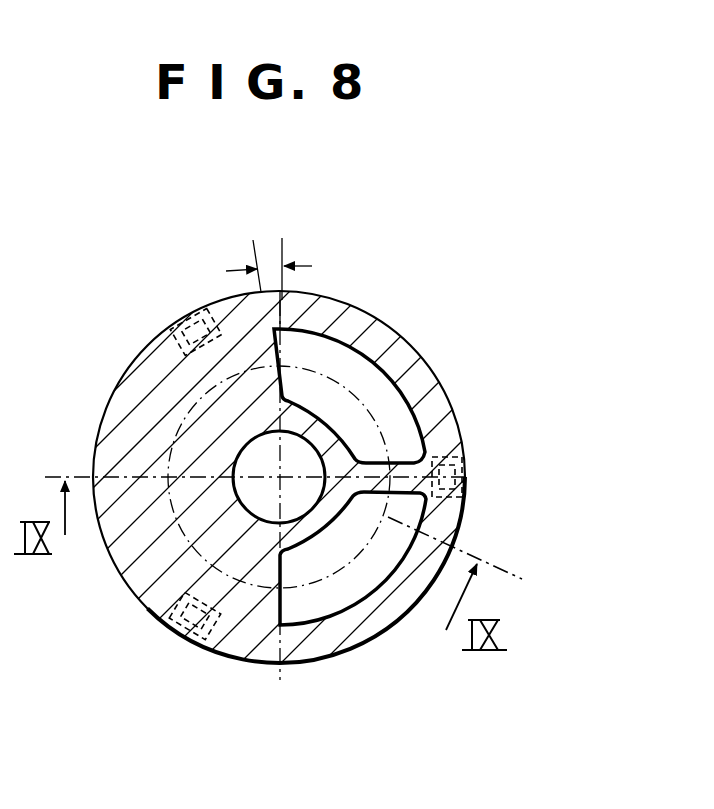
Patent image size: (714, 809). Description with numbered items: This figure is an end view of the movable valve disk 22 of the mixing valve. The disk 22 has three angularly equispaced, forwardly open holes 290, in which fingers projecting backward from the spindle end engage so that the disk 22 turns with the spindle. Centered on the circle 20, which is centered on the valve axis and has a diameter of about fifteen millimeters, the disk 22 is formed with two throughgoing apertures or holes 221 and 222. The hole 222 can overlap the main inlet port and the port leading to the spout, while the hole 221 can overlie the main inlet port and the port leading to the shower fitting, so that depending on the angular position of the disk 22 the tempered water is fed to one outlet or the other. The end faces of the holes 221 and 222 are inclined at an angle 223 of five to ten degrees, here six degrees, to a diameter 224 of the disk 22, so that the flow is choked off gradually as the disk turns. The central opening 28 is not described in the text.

The circle 20 is at (170, 512).
The movable valve disk 22 is at (449, 403).
The hole 28 is at (280, 526).
The throughgoing hole 221 is at (349, 597).
The throughgoing hole 222 is at (385, 393).
The angle 223 is at (264, 258).
The diameter 224 is at (283, 254).
The forwardly open holes 290 is at (182, 318).